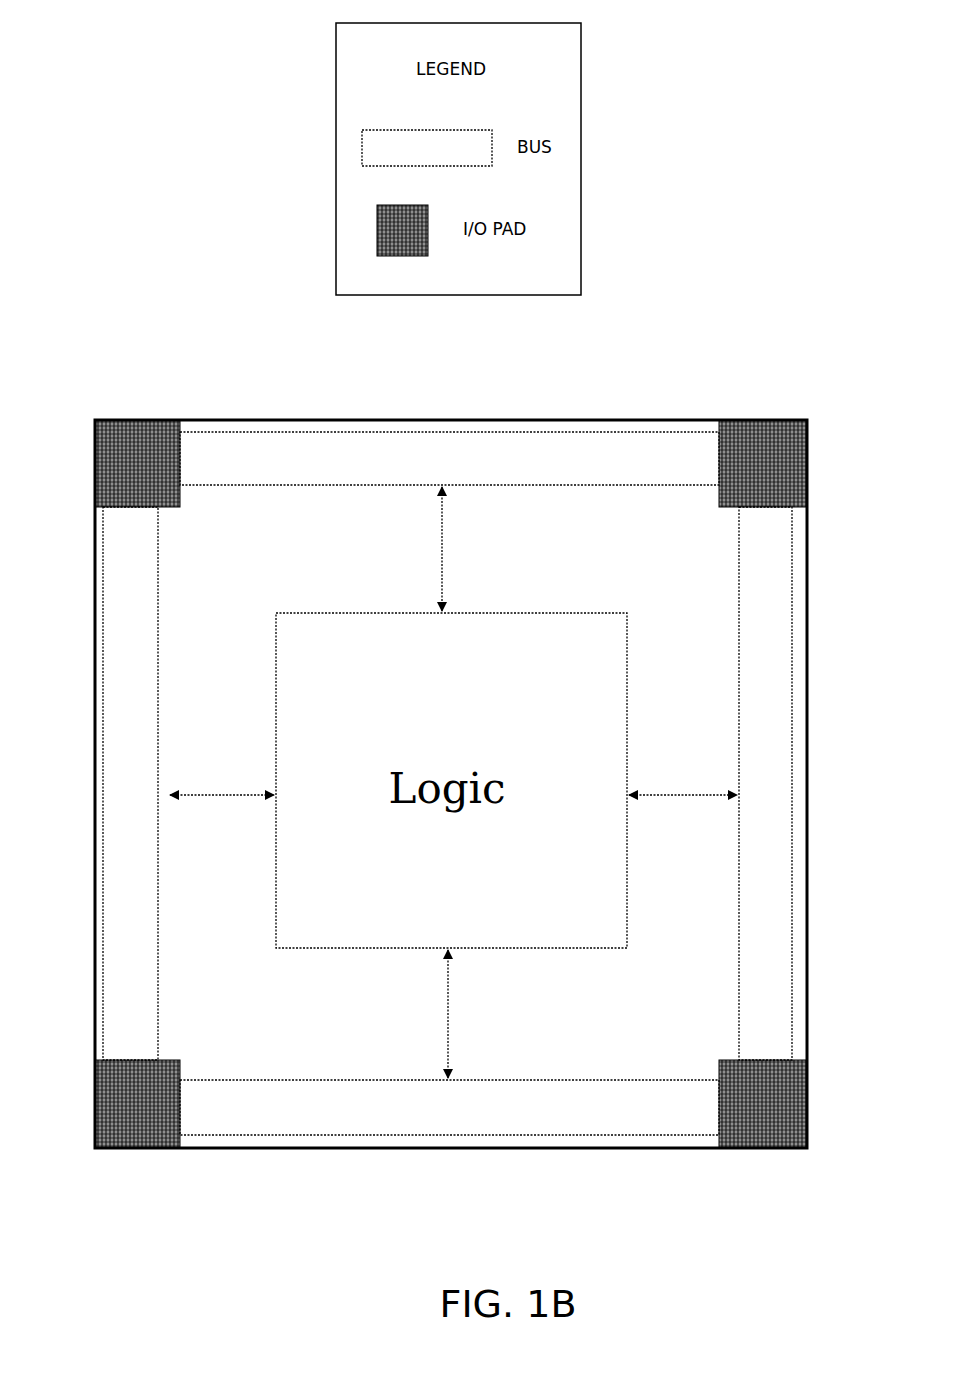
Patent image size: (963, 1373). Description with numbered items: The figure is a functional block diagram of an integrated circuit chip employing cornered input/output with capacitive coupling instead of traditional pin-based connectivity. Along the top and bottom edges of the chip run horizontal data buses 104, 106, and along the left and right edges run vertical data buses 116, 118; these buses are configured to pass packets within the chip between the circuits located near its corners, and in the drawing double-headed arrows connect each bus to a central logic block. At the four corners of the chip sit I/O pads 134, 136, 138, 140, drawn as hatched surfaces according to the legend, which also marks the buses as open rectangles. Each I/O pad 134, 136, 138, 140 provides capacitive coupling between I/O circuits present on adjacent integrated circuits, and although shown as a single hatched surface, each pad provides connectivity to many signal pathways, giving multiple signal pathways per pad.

The horizontal data bus 104 is at (412, 432).
The horizontal data bus 106 is at (414, 1136).
The vertical data bus 116 is at (103, 618).
The vertical data bus 118 is at (792, 698).
The I/O pad 134 is at (95, 474).
The I/O pad 136 is at (807, 470).
The I/O pad 138 is at (807, 1093).
The I/O pad 140 is at (95, 1099).